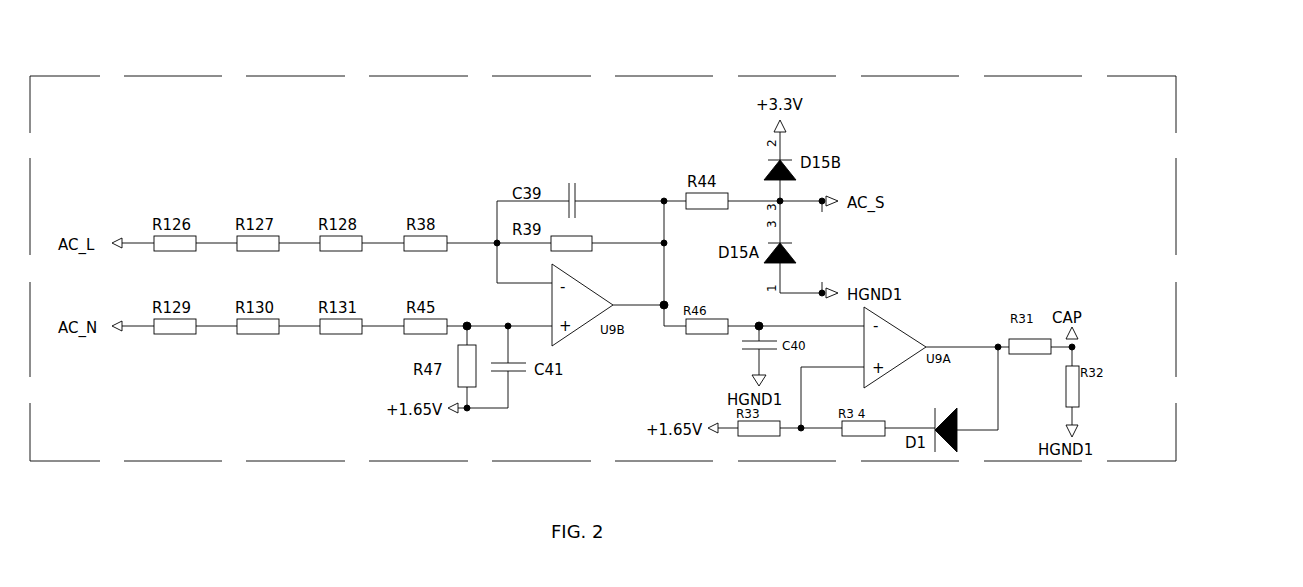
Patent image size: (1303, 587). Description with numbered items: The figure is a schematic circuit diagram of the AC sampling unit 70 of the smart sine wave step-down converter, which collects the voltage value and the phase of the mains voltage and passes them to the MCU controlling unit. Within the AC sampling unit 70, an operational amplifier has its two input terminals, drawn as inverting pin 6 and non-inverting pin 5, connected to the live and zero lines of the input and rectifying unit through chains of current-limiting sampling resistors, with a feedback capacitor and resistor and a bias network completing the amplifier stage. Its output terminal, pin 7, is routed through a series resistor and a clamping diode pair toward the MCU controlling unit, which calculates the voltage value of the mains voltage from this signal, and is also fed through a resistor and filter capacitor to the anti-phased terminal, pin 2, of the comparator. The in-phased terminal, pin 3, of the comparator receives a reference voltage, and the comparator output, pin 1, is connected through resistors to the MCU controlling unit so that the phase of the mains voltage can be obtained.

The AC sampling unit 70 is at (1103, 233).
The output pin 1 of op-amp U9A 1 is at (967, 337).
The inverting input pin 2 of op-amp U9A 2 is at (811, 315).
The non-inverting input pin 3 of op-amp U9A 3 is at (832, 387).
The non-inverting input pin 5 of op-amp U9B 5 is at (528, 317).
The inverting input pin 6 of op-amp U9B 6 is at (524, 242).
The output pin 7 of op-amp U9B 7 is at (640, 297).